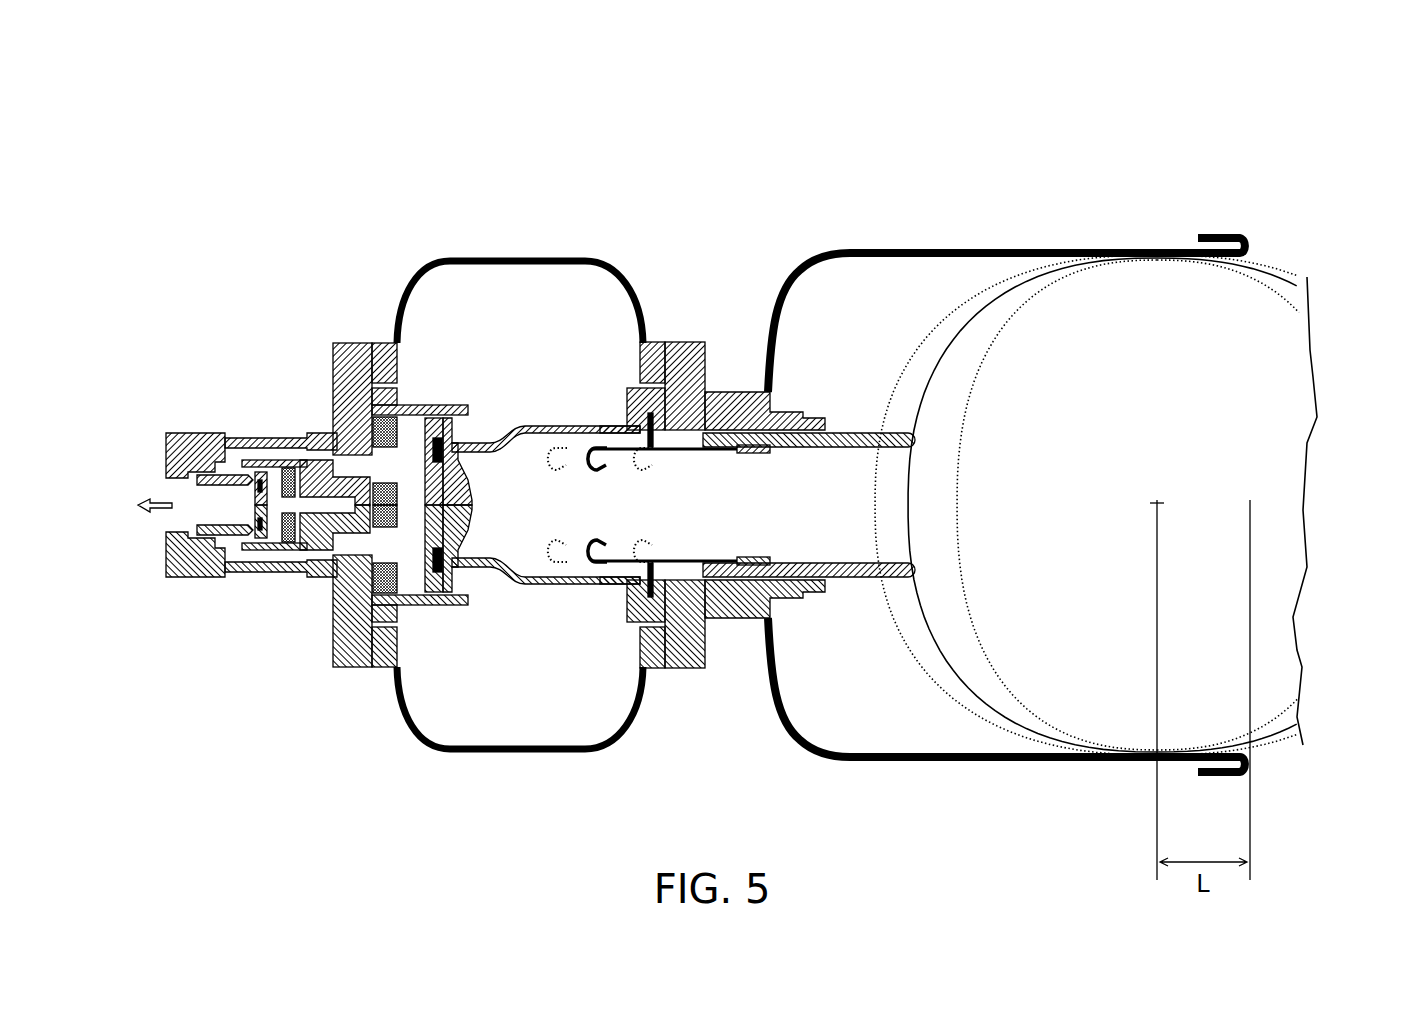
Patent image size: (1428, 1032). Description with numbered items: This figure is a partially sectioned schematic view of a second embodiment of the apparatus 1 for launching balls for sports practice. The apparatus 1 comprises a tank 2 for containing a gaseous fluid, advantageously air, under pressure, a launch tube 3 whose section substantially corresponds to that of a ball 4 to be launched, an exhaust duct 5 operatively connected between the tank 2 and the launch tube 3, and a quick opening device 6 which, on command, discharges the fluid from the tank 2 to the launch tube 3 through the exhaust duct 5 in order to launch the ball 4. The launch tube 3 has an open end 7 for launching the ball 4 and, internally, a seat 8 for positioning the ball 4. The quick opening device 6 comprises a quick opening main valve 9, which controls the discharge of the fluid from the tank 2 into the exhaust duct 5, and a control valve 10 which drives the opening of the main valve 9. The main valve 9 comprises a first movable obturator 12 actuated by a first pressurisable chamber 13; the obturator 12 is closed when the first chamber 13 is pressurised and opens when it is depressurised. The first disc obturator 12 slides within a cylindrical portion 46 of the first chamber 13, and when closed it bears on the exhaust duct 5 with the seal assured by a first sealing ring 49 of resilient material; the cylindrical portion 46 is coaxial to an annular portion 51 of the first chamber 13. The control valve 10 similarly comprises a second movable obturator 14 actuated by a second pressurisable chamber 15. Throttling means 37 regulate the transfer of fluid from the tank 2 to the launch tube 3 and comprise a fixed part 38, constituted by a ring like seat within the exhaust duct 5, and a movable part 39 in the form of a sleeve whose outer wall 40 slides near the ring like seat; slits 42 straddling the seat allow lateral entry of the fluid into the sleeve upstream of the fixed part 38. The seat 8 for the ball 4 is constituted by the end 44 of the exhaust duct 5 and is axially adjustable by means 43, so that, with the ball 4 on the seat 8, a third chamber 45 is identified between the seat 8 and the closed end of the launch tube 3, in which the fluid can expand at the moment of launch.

The apparatus for launching balls 1 is at (1320, 134).
The tank 2 is at (430, 316).
The launch tube 3 is at (840, 221).
The ball 4 is at (1227, 338).
The exhaust duct 5 is at (803, 507).
The quick opening device 6 is at (480, 600).
The open end 7 is at (1291, 413).
The seat 8 is at (953, 483).
The quick opening main valve 9 is at (439, 374).
The control valve 10 is at (223, 500).
The first movable obturator 12 is at (447, 553).
The first pressurisable chamber 13 is at (330, 565).
The second movable obturator 14 is at (173, 565).
The second pressurisable chamber 15 is at (278, 513).
The throttling means 37 is at (607, 421).
The fixed part 38 is at (663, 450).
The movable part 39 is at (593, 557).
The outer wall 40 is at (622, 431).
The slits 42 is at (705, 395).
The means for varying the position of the seat 43 is at (839, 402).
The end of the exhaust duct 44 is at (912, 433).
The third chamber 45 is at (866, 685).
The cylindrical portion 46 is at (355, 610).
The first sealing ring 49 is at (412, 550).
The annular portion 51 is at (229, 462).